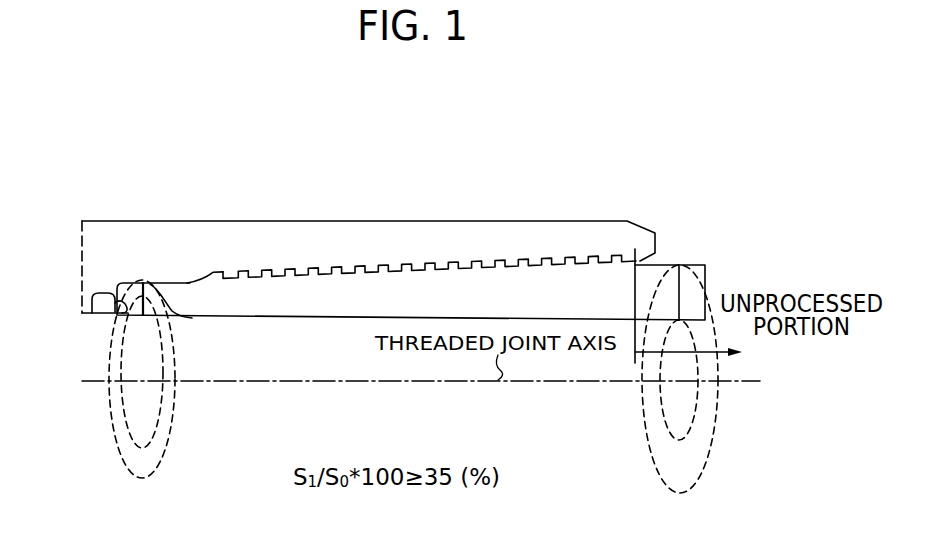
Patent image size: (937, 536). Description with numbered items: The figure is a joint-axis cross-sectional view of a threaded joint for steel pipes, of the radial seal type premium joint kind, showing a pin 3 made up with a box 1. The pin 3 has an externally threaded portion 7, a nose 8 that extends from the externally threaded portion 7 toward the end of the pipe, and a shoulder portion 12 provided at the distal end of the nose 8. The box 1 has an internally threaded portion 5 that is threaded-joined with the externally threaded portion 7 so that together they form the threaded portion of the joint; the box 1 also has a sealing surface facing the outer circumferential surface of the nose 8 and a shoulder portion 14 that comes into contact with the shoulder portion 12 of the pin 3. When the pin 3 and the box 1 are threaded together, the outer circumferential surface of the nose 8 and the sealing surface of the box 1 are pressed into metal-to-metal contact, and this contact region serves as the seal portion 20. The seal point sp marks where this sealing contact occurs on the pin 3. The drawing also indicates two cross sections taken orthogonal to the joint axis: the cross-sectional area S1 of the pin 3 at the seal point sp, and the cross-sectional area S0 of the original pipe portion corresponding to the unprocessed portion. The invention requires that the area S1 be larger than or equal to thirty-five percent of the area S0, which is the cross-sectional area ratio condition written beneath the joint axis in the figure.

The box 1 is at (357, 232).
The pin 3 is at (348, 296).
The internally threaded portion 5 is at (303, 271).
The externally threaded portion 7 is at (429, 257).
The nose 8 is at (192, 318).
The shoulder portion 12 is at (100, 312).
The shoulder portion 14 is at (122, 315).
The seal portion 20 is at (155, 278).
The seal point sp is at (143, 271).
The cross-sectional area of the original pipe portion S0 is at (642, 411).
The cross-sectional area of the pin at the seal point S1 is at (150, 462).